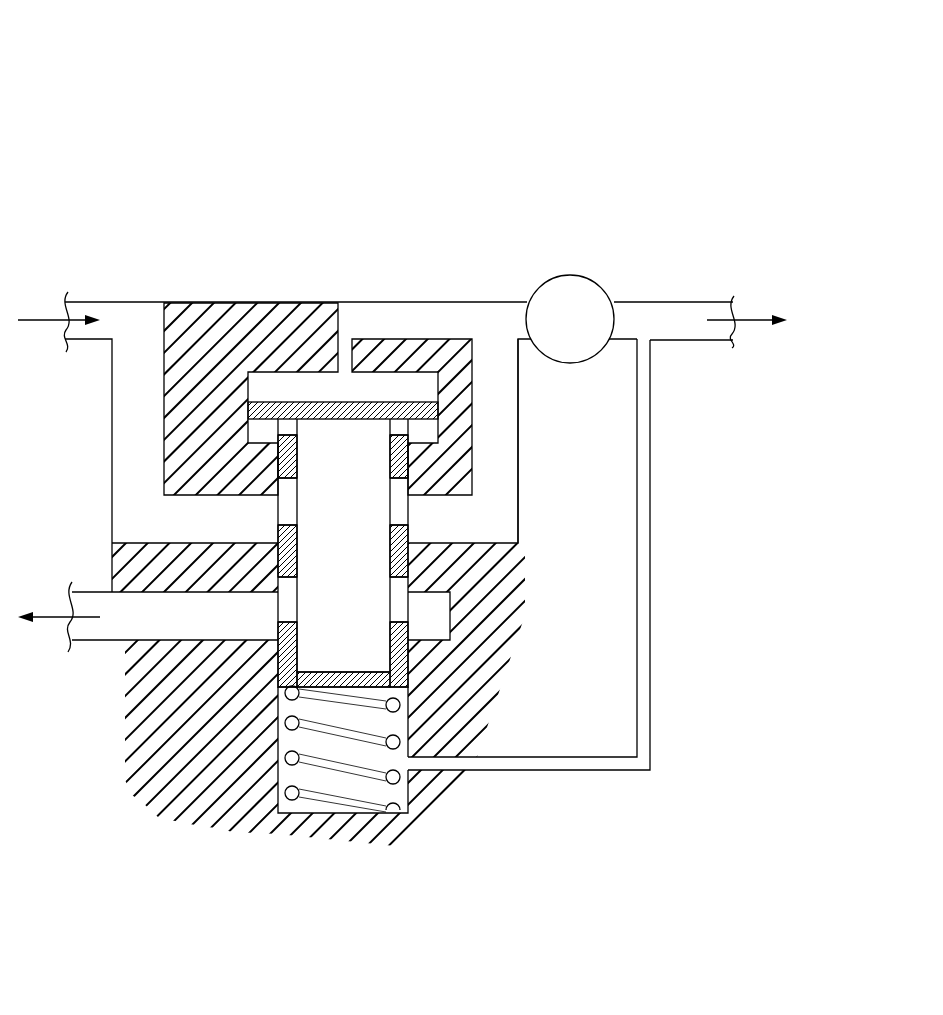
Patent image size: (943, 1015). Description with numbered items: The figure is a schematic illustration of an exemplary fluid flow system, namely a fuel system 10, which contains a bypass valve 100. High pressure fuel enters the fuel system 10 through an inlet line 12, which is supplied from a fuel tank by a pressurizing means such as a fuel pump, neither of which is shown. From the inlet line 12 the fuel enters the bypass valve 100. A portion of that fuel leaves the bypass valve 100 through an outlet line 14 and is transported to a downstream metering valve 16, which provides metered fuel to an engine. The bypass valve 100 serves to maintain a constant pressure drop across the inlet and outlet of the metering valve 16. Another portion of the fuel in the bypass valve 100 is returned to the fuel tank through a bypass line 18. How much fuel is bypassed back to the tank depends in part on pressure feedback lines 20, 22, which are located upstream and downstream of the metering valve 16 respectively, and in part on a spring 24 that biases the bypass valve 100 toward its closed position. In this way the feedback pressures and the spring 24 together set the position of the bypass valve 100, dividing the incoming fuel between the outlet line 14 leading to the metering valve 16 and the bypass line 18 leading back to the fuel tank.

The fuel system 10 is at (127, 90).
The inlet line 12 is at (140, 394).
The outlet line 14 is at (503, 503).
The metering valve 16 is at (565, 295).
The bypass line 18 is at (100, 605).
The pressure feedback line 20 is at (405, 320).
The pressure feedback line 22 is at (643, 452).
The spring 24 is at (338, 765).
The bypass valve 100 is at (300, 392).